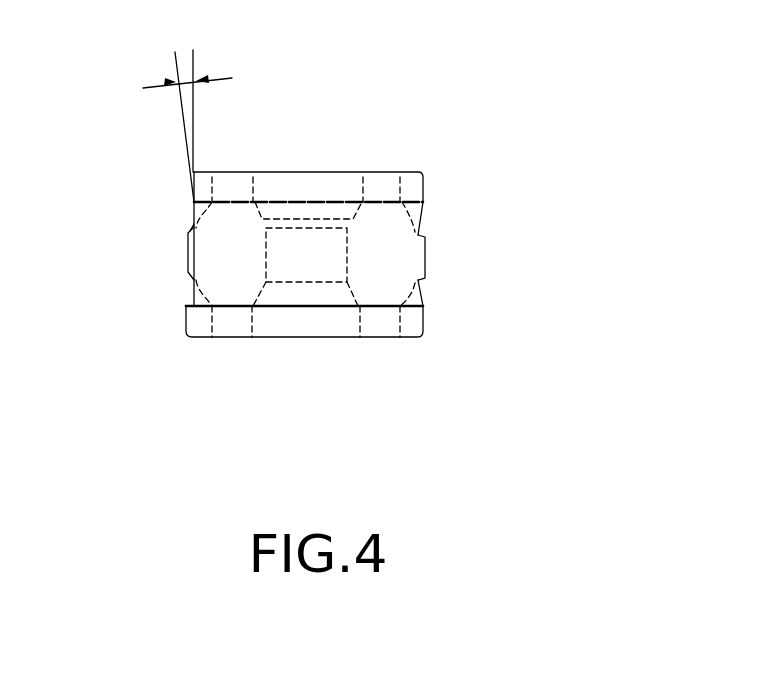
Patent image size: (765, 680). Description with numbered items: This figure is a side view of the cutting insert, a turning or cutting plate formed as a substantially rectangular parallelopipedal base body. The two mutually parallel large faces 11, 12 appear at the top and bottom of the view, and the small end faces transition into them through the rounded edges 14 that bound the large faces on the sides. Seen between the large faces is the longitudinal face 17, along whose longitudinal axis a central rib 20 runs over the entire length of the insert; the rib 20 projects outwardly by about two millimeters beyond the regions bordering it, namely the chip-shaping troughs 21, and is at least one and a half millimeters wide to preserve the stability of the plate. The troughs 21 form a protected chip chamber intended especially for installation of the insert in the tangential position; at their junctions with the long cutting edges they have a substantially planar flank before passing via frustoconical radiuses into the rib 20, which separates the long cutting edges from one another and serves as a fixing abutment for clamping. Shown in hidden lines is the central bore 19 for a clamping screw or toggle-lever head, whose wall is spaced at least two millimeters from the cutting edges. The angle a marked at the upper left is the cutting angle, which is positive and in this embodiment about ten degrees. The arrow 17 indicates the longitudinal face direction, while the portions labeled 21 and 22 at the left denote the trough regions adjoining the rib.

The cutting angle a is at (185, 80).
The large face 11 is at (233, 172).
The large face 12 is at (267, 337).
The rounded edge 14 is at (395, 172).
The longitudinal face 17 is at (147, 306).
The bore 19 is at (318, 295).
The rib 20 is at (186, 266).
The chip-shaping trough 21 is at (193, 207).
The rounded portion 22 is at (189, 232).